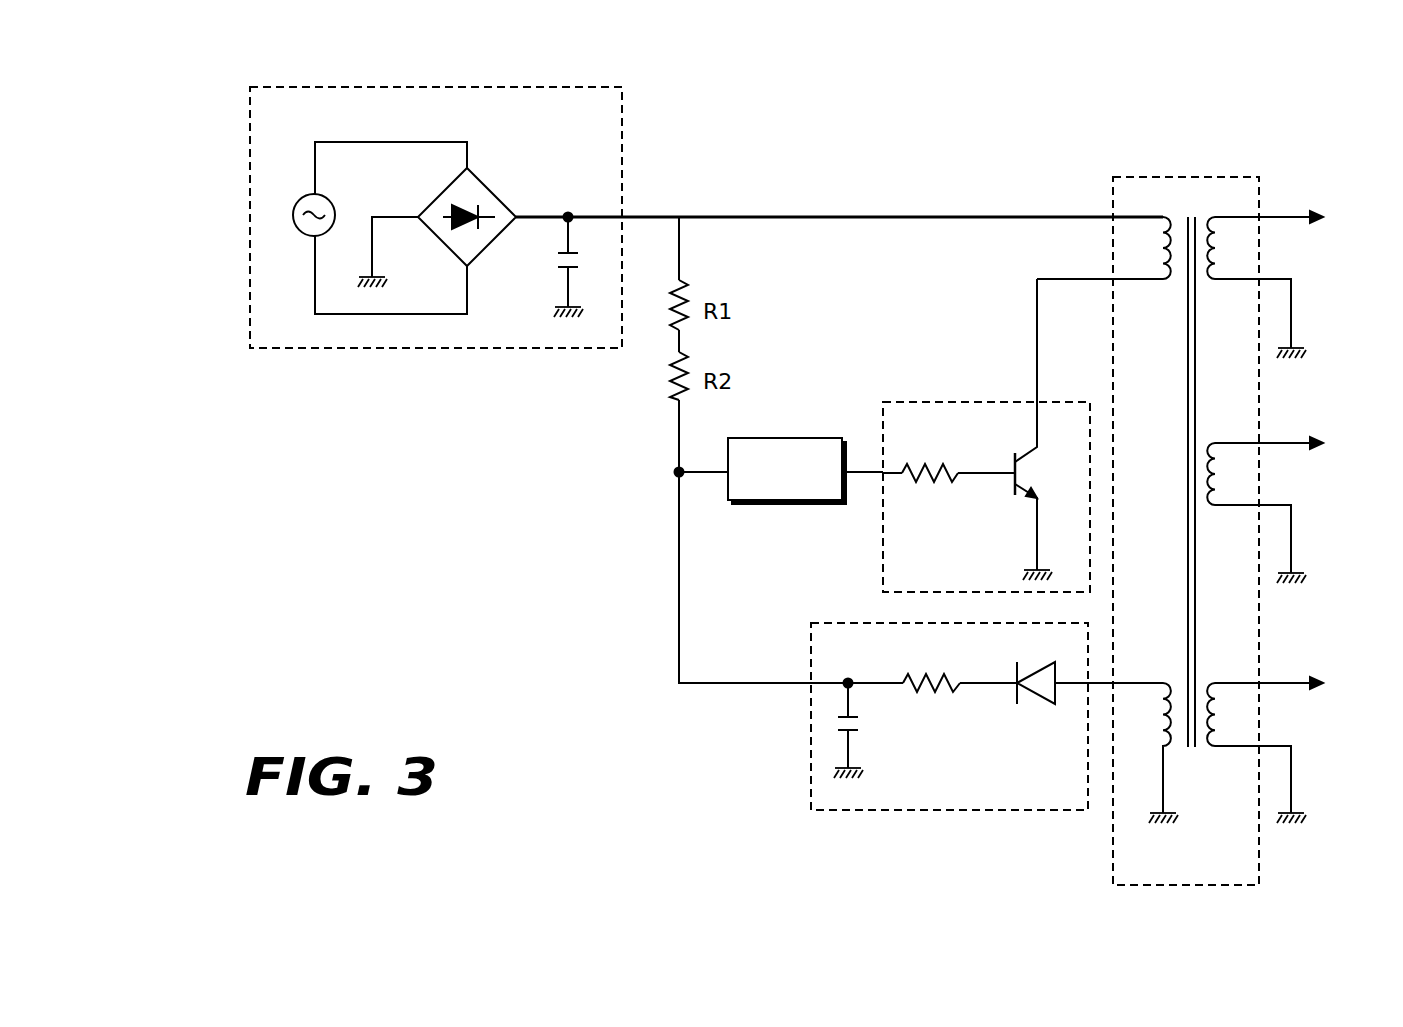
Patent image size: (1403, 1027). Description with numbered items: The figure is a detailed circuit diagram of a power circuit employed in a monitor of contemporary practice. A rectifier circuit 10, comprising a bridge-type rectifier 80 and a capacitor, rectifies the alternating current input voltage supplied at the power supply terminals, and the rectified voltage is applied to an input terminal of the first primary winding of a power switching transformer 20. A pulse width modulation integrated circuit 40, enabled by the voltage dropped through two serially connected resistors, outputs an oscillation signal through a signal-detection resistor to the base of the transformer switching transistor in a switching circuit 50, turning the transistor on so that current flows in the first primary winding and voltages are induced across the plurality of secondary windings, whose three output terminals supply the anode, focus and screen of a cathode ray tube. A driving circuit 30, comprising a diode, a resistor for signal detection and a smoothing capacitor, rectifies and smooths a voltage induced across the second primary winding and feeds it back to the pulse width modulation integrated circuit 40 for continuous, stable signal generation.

The rectifier circuit 10 is at (454, 87).
The bridge rectifier 80 is at (494, 193).
The power switching transformer 20 is at (1205, 177).
The pulse width modulation integrated circuit 40 is at (770, 438).
The switching circuit 50 is at (930, 402).
The driving circuit 30 is at (836, 623).